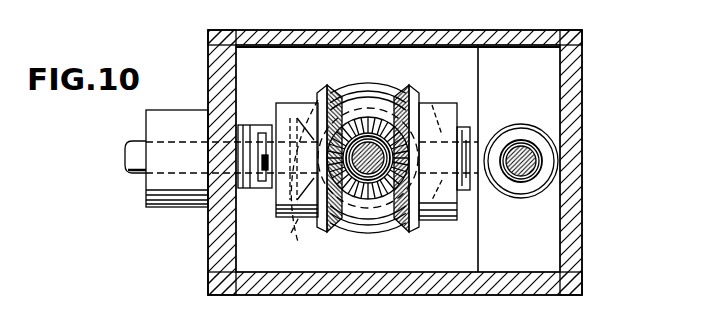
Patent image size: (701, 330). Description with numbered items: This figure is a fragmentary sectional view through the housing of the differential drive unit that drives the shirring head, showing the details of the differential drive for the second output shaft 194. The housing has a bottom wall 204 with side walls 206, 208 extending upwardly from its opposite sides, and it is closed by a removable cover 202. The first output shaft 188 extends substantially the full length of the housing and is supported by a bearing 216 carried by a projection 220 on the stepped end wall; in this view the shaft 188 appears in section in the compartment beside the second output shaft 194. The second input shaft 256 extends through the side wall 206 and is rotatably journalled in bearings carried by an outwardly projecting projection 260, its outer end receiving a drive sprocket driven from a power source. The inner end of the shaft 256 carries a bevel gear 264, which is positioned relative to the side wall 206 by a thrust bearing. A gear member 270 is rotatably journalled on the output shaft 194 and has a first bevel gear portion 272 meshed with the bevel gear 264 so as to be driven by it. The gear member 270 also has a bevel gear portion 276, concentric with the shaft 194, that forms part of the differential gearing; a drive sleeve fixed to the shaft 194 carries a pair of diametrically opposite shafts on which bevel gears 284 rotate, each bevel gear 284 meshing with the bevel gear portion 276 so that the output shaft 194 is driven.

The first output shaft 188 is at (524, 151).
The second output shaft 194 is at (417, 123).
The removable cover 202 is at (538, 40).
The bottom wall 204 is at (607, 297).
The side wall 206 is at (210, 238).
The side wall 208 is at (577, 88).
The bearing 216 is at (547, 163).
The projection 220 is at (503, 128).
The second input shaft 256 is at (128, 143).
The outwardly projecting projection 260 is at (165, 118).
The bevel gear 264 is at (283, 181).
The gear member 270 is at (372, 213).
The first bevel gear portion 272 is at (375, 88).
The bevel gear portion 276 is at (346, 112).
The bevel gears 284 is at (321, 97).